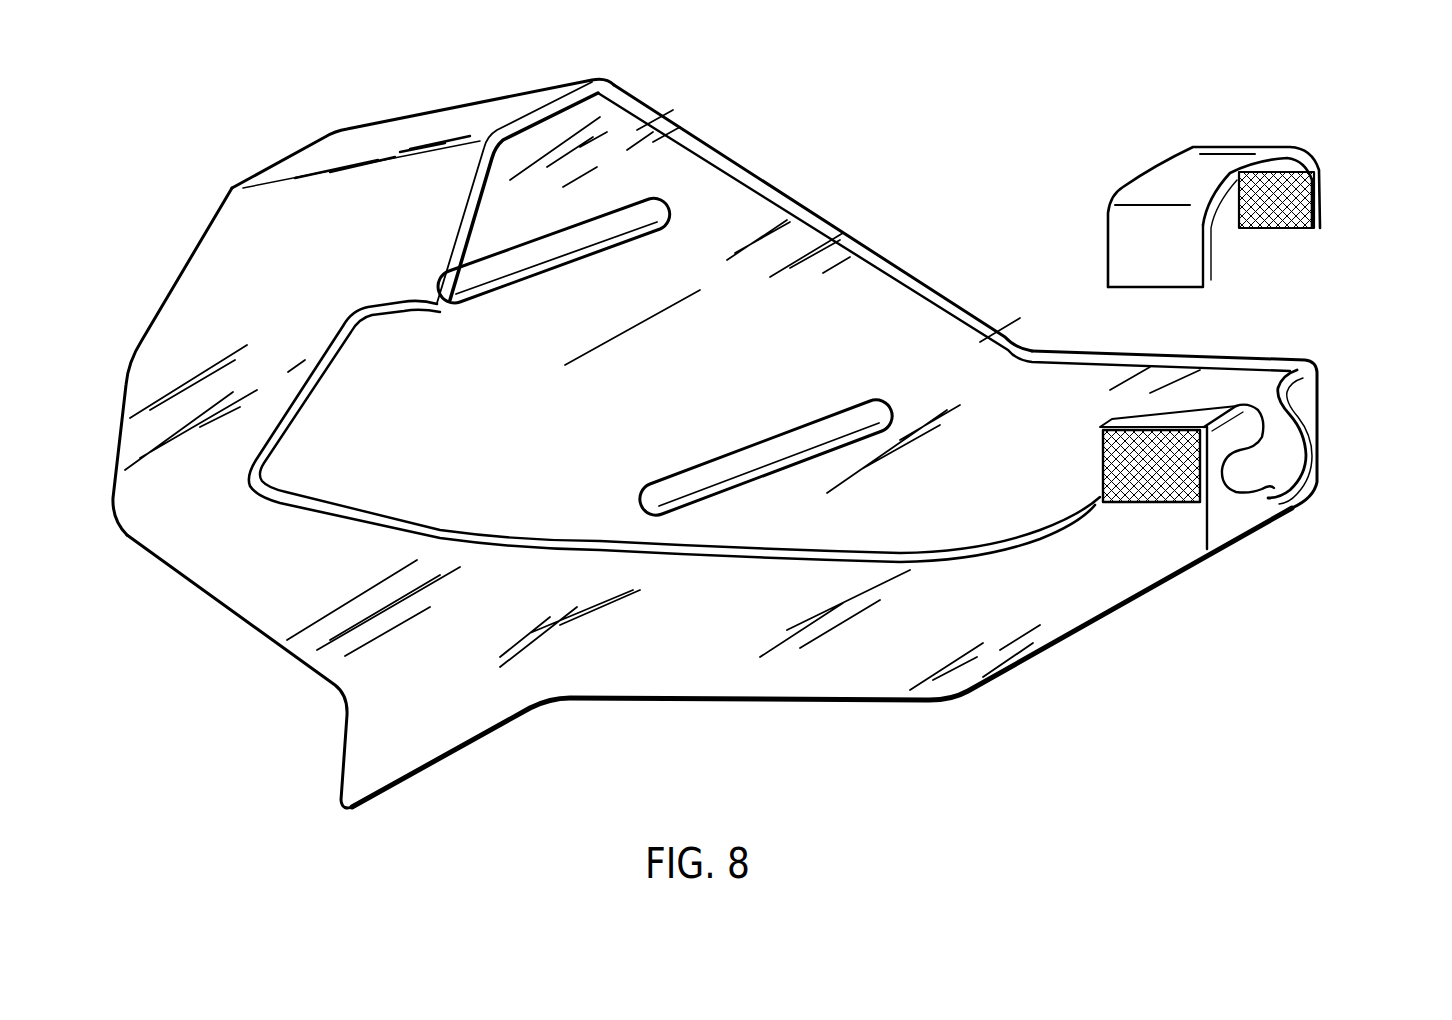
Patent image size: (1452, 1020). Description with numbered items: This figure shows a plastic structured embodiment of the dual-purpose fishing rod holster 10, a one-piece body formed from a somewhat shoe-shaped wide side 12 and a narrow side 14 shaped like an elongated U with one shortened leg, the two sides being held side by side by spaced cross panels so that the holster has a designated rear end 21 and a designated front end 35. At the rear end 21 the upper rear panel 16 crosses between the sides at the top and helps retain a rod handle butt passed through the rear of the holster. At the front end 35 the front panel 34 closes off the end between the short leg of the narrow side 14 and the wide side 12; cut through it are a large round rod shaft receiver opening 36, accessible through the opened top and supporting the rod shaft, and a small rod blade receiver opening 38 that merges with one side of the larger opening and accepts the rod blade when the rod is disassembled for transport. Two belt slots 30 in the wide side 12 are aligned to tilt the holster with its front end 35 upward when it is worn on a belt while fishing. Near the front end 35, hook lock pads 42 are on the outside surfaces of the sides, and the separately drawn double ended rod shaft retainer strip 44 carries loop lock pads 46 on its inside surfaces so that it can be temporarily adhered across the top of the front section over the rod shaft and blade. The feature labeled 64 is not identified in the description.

The dual-purpose fishing rod holster 10 is at (767, 152).
The wide side 12 is at (865, 312).
The narrow side 14 is at (292, 597).
The upper rear panel 16 is at (377, 137).
The rear end 21 is at (141, 309).
The belt slots 30 is at (592, 258).
The front panel 34 is at (1310, 390).
The front end 35 is at (1328, 422).
The rod shaft receiver opening 36 is at (1293, 497).
The rod blade receiver opening 38 is at (1241, 497).
The hook lock pads 42 is at (1118, 456).
The double ended rod shaft retainer strip 44 is at (1177, 173).
The loop lock pads 46 is at (1320, 205).
The bottom edge 64 is at (630, 708).